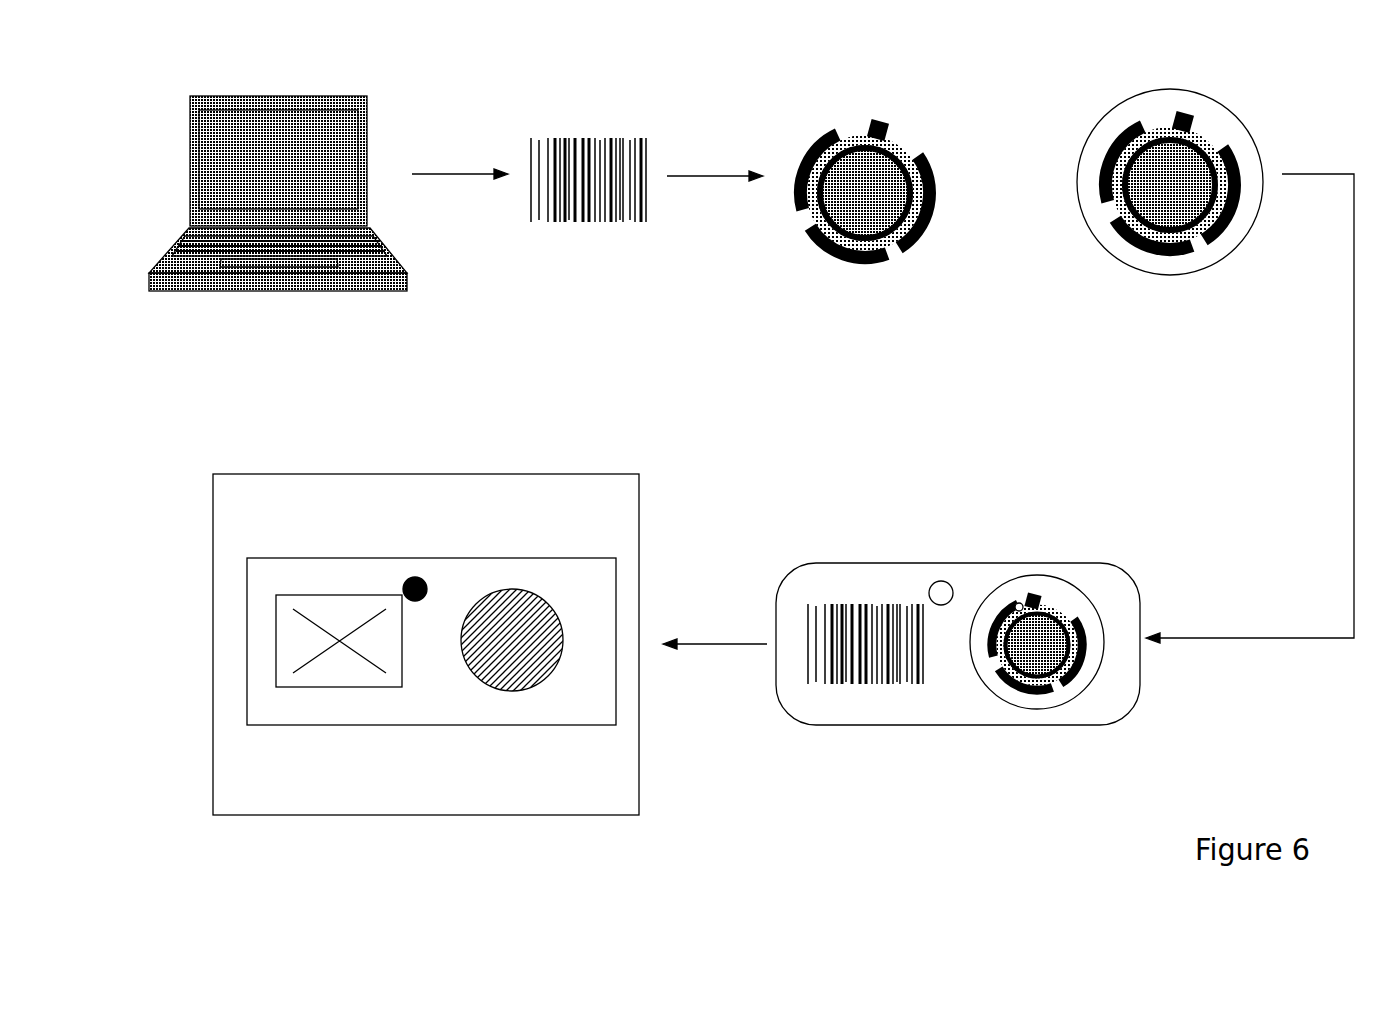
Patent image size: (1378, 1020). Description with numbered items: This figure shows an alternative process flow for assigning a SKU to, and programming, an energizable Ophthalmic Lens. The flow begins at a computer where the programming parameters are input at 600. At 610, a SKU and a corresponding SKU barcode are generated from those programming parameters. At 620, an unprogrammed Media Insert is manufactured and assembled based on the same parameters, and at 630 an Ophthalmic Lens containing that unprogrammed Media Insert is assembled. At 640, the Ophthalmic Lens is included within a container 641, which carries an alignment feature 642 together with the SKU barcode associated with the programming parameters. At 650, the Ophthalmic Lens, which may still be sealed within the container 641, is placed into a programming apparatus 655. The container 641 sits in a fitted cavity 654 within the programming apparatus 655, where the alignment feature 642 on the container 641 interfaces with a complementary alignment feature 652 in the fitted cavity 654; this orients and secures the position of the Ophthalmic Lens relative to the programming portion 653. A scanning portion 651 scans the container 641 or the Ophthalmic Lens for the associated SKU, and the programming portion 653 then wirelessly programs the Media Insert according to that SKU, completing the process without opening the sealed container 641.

The programming parameters input step 600 is at (278, 236).
The SKU generation step 610 is at (588, 225).
The Media Insert assembly step 620 is at (864, 199).
The Ophthalmic Lens assembly step 630 is at (1189, 191).
The container inclusion step 640 is at (976, 639).
The container 641 is at (1122, 588).
The alignment feature 642 is at (944, 581).
The programming step 650 is at (477, 651).
The scanning portion 651 is at (330, 618).
The complementary alignment feature 652 is at (411, 577).
The programming portion 653 is at (540, 610).
The fitted cavity 654 is at (435, 707).
The programming apparatus 655 is at (622, 773).